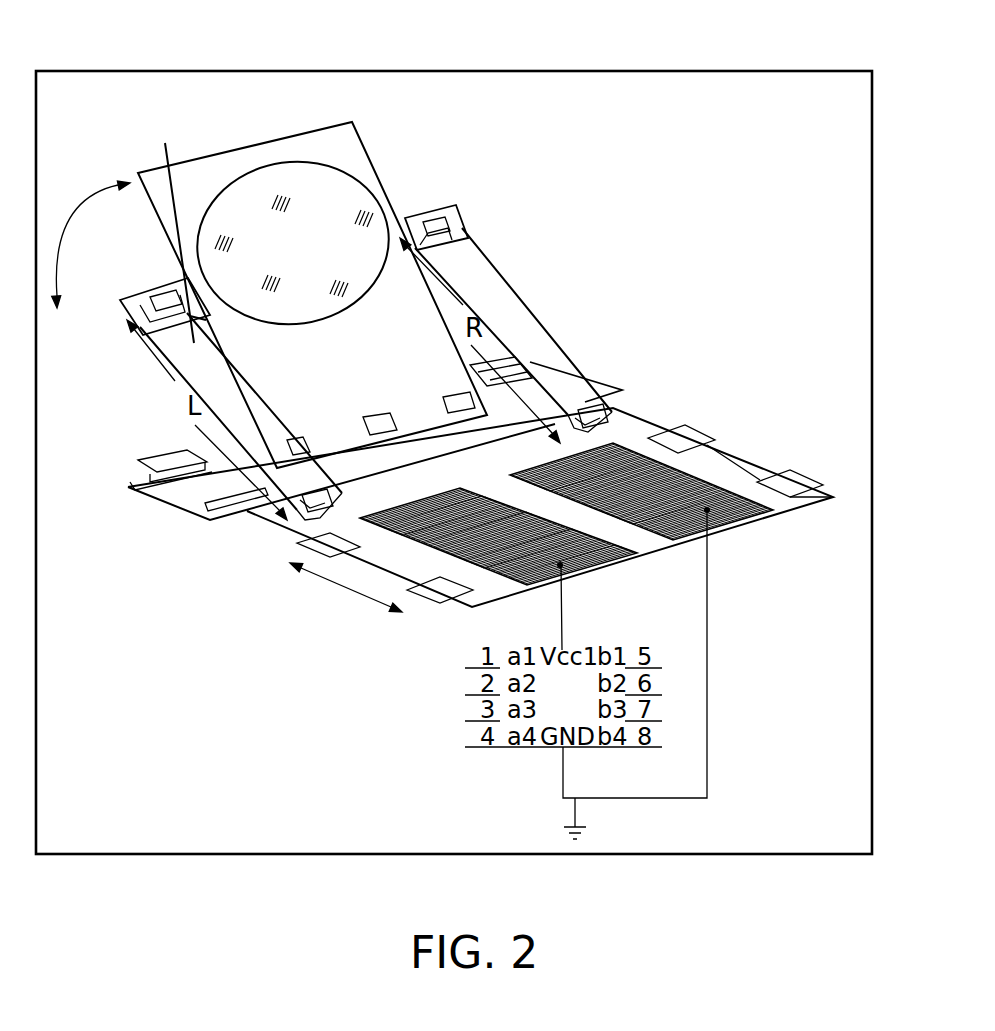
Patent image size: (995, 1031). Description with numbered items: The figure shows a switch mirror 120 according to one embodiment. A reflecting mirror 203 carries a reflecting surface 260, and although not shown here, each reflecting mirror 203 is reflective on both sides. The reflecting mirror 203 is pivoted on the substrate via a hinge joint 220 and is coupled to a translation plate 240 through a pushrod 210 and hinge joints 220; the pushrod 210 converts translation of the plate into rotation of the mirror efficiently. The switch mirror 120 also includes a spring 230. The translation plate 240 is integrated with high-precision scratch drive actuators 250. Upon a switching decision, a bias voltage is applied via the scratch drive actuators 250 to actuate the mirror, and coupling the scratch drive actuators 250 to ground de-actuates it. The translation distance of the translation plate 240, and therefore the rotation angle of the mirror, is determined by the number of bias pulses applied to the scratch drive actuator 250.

The switch mirror 120 is at (662, 72).
The reflecting mirror 203 is at (235, 147).
The pushrod 210 is at (178, 231).
The hinge joint 220 is at (467, 222).
The spring 230 is at (158, 300).
The translation plate 240 is at (657, 427).
The scratch drive actuator 250 is at (587, 563).
The reflecting surface 260 is at (363, 180).